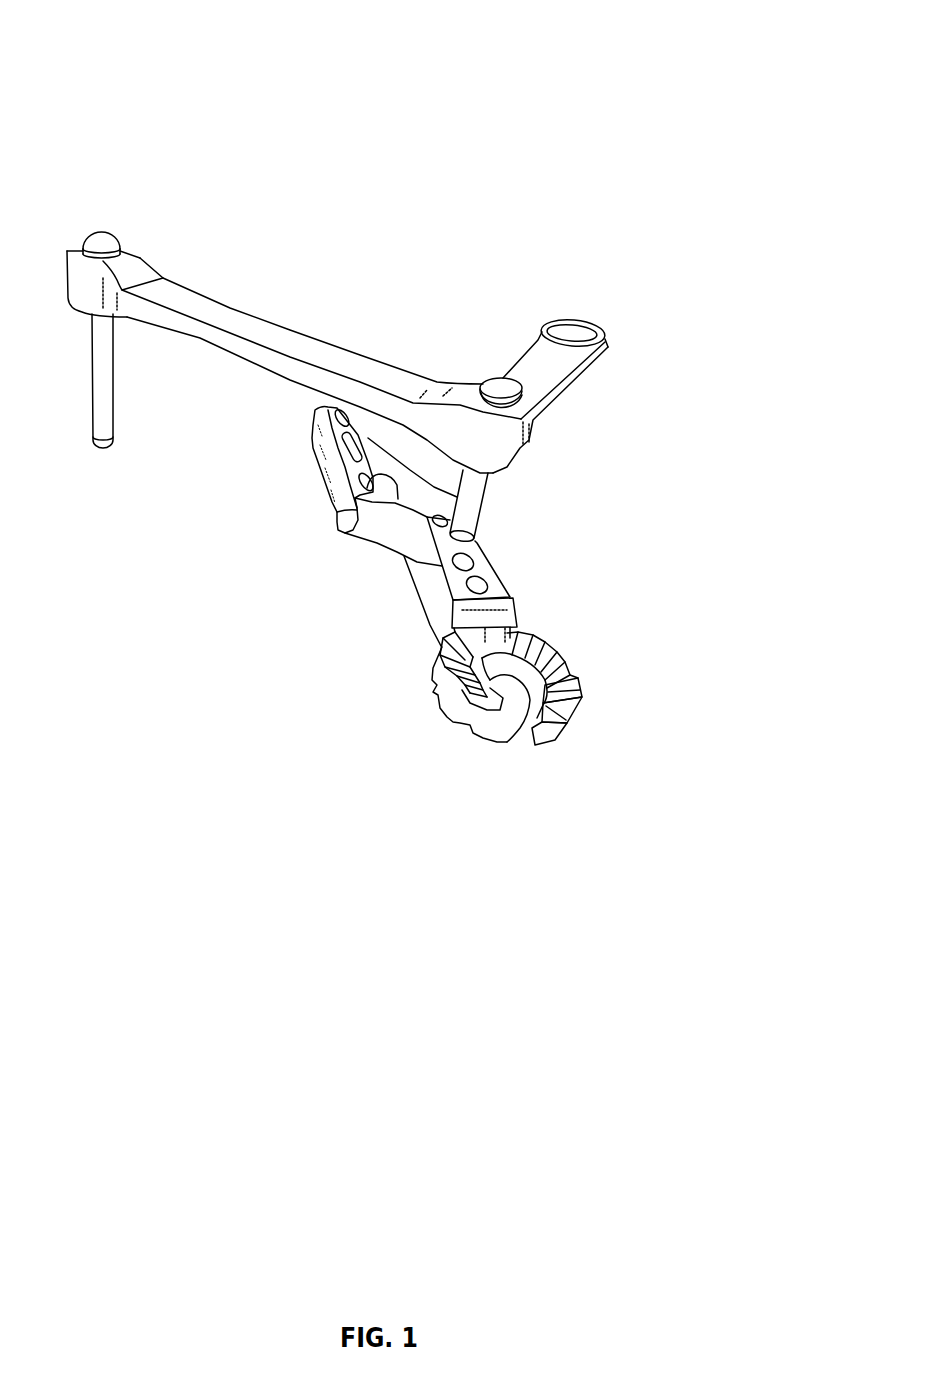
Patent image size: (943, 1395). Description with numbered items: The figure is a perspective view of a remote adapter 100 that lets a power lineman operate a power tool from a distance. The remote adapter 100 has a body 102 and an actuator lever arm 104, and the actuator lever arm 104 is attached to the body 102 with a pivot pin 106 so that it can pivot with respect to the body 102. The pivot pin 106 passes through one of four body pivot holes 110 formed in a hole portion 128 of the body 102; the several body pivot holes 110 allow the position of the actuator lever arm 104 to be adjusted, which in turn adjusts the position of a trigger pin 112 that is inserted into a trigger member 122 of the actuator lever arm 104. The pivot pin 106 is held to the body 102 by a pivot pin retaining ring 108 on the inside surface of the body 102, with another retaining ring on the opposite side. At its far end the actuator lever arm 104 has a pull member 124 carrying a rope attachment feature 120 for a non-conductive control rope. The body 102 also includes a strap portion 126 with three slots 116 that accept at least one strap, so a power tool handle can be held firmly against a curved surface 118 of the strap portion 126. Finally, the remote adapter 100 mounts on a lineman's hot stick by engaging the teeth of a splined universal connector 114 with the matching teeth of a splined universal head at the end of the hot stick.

The remote adapter 100 is at (691, 64).
The body 102 is at (520, 527).
The actuator lever arm 104 is at (428, 328).
The pivot pin 106 is at (482, 488).
The pivot pin retaining ring 108 is at (480, 543).
The body pivot holes 110 is at (417, 562).
The trigger pin 112 is at (105, 430).
The splined universal connector 114 is at (570, 667).
The slots 116 is at (315, 410).
The curved surface 118 is at (332, 465).
The rope attachment feature 120 is at (575, 318).
The trigger member 122 is at (228, 313).
The pull member 124 is at (542, 362).
The strap portion 126 is at (337, 532).
The hole portion 128 is at (438, 607).